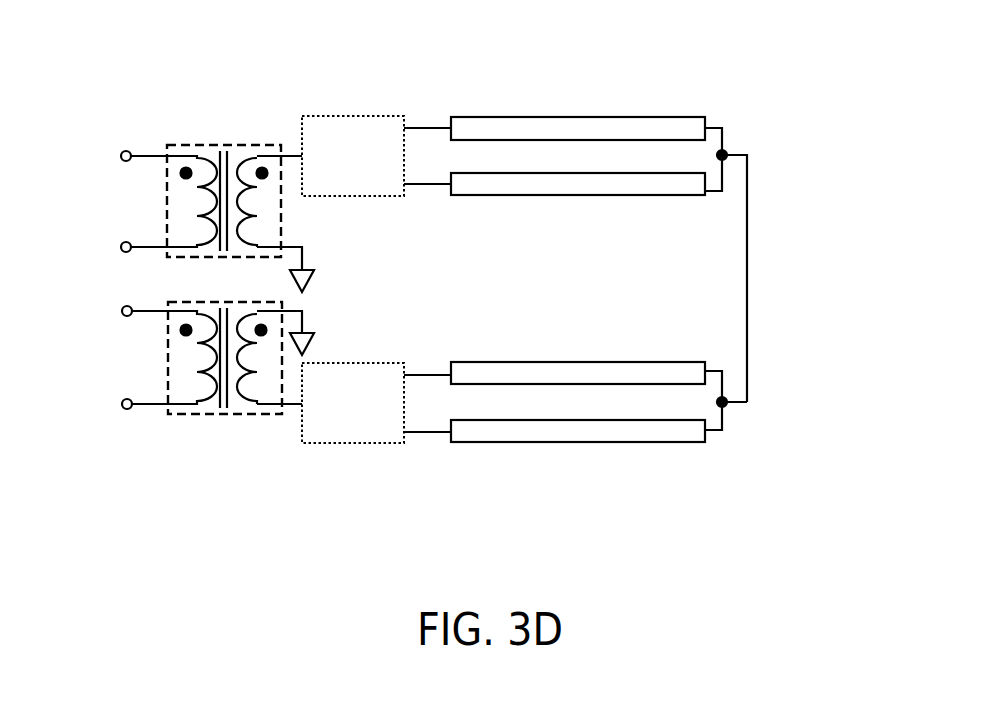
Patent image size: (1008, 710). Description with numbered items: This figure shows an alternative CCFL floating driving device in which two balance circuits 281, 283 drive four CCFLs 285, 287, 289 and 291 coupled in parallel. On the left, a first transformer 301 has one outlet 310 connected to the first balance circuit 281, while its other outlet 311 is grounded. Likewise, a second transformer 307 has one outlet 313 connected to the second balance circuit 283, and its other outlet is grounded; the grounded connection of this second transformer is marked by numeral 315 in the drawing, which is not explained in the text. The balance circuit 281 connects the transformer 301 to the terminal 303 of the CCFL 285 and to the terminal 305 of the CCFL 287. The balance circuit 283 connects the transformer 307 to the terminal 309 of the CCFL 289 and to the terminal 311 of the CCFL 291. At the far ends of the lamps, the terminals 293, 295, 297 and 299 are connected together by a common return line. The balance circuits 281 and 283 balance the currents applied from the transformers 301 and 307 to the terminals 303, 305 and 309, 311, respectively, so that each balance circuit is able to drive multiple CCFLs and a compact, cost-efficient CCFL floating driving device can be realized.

The balance circuit 281 is at (355, 116).
The balance circuit 283 is at (347, 444).
The CCFL 285 is at (634, 115).
The CCFL 287 is at (512, 172).
The CCFL 289 is at (546, 385).
The CCFL 291 is at (650, 443).
The terminal 293 is at (713, 124).
The terminal 295 is at (700, 193).
The terminal 297 is at (705, 369).
The terminal 299 is at (722, 433).
The transformer 301 is at (217, 146).
The terminal 303 is at (449, 118).
The terminal 305 is at (450, 195).
The transformer 307 is at (220, 415).
The terminal 309 is at (451, 363).
The outlet 310 is at (283, 153).
The terminal / outlet 311 is at (305, 247).
The outlet 313 is at (284, 405).
The ground connection of second transformer 315 is at (305, 311).